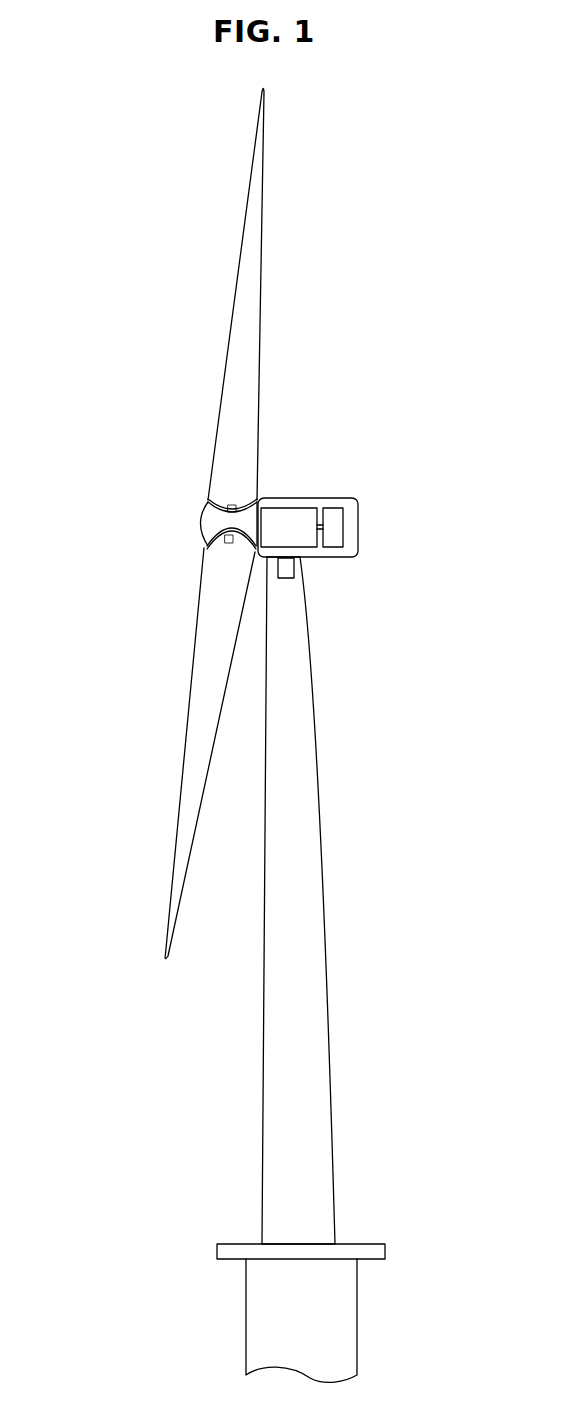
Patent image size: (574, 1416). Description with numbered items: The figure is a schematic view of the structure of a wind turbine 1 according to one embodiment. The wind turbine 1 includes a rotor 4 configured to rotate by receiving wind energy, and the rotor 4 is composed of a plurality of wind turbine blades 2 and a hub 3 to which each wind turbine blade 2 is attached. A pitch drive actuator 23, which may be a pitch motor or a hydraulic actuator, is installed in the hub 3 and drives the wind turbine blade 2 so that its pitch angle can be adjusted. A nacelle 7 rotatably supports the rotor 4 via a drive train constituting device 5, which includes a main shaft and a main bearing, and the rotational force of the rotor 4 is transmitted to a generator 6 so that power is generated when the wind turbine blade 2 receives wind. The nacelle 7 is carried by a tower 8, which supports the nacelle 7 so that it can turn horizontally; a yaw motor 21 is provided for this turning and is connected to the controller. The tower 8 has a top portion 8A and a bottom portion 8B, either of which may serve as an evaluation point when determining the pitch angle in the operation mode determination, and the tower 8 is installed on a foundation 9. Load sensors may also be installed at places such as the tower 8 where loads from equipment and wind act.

The wind turbine 1 is at (391, 203).
The wind turbine blade 2 is at (243, 237).
The hub 3 is at (196, 523).
The rotor 4 is at (140, 489).
The drive train constituting device 5 is at (289, 518).
The generator 6 is at (332, 520).
The nacelle 7 is at (358, 527).
The tower 8 is at (322, 900).
The top portion of the tower 8A is at (308, 583).
The bottom portion of the tower 8B is at (322, 1230).
The foundation 9 is at (357, 1318).
The yaw motor 21 is at (284, 573).
The pitch drive actuator 23 is at (229, 503).